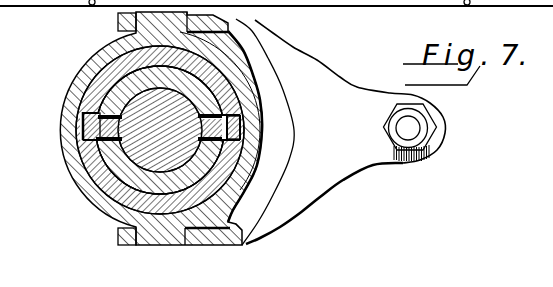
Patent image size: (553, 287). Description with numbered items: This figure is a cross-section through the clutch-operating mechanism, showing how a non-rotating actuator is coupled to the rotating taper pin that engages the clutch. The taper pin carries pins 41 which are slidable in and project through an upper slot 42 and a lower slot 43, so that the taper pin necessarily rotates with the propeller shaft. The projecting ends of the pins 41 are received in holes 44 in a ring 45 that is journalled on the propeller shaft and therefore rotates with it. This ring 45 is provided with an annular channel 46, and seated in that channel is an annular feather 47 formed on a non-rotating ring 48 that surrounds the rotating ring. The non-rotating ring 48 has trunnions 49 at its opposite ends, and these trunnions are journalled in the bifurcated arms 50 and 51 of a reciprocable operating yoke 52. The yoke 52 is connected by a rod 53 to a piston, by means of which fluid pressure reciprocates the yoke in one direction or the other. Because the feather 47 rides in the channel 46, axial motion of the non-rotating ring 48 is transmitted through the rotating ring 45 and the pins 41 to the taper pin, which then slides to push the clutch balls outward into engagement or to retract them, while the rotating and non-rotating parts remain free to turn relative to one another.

The pins 41 is at (241, 118).
The upper slot 42 is at (207, 115).
The lower slot 43 is at (102, 116).
The holes 44 is at (83, 123).
The ring 45 is at (95, 183).
The annular channel 46 is at (85, 112).
The annular feather 47 is at (85, 138).
The non-rotating ring 48 is at (262, 143).
The trunnions 49 is at (153, 18).
The bifurcated arm 50 is at (229, 22).
The bifurcated arm 51 is at (292, 224).
The reciprocable operating yoke 52 is at (374, 167).
The rod 53 is at (413, 130).